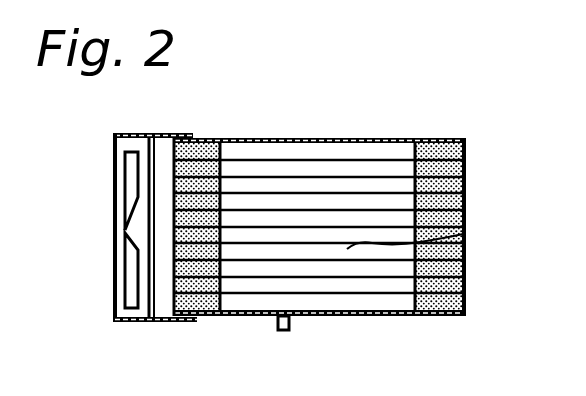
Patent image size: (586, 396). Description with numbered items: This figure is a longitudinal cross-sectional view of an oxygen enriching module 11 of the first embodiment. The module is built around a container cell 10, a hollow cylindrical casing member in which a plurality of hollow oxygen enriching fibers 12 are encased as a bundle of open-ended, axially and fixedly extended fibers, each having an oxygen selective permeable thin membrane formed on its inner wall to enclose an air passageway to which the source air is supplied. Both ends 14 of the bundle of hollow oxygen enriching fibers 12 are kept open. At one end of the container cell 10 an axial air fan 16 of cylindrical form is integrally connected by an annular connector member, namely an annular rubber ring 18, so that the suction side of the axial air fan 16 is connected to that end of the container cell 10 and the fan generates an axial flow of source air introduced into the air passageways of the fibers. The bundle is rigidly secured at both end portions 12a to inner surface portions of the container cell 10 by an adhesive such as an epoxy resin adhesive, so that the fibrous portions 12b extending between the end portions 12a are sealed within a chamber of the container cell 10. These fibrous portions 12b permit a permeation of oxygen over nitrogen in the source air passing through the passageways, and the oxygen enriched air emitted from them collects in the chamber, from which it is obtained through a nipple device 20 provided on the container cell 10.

The container cell 10 is at (443, 332).
The assembly 11 is at (467, 77).
The hollow oxygen enriching fibers 12 is at (297, 162).
The end portions 12a is at (203, 317).
The fibrous portions 12b is at (463, 233).
The ends of the bundle 14 is at (184, 164).
The axial air fan 16 is at (113, 290).
The annular rubber ring 18 is at (153, 325).
The nipple device 20 is at (290, 325).